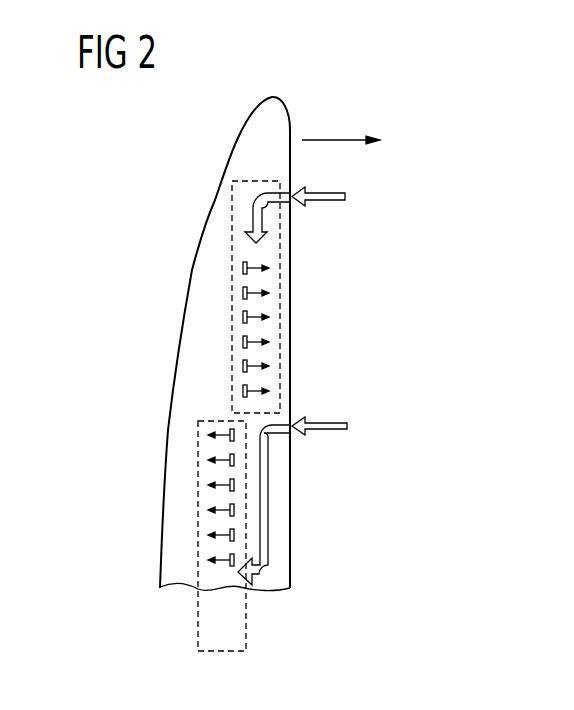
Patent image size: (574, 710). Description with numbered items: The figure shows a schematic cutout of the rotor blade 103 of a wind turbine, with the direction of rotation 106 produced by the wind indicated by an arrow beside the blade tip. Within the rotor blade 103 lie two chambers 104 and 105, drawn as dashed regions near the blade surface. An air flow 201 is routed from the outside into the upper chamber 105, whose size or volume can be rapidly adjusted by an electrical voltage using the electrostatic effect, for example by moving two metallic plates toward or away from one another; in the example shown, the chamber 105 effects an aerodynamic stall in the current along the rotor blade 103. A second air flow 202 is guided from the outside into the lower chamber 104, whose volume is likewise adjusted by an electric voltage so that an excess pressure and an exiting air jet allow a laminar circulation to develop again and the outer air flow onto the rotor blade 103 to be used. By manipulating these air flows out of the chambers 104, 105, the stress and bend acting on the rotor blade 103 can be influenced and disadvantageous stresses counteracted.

The rotor blade 103 is at (237, 138).
The chamber 104 is at (198, 470).
The chamber 105 is at (232, 246).
The direction of rotation 106 is at (335, 140).
The air flow 201 is at (345, 196).
The air flow 202 is at (347, 426).